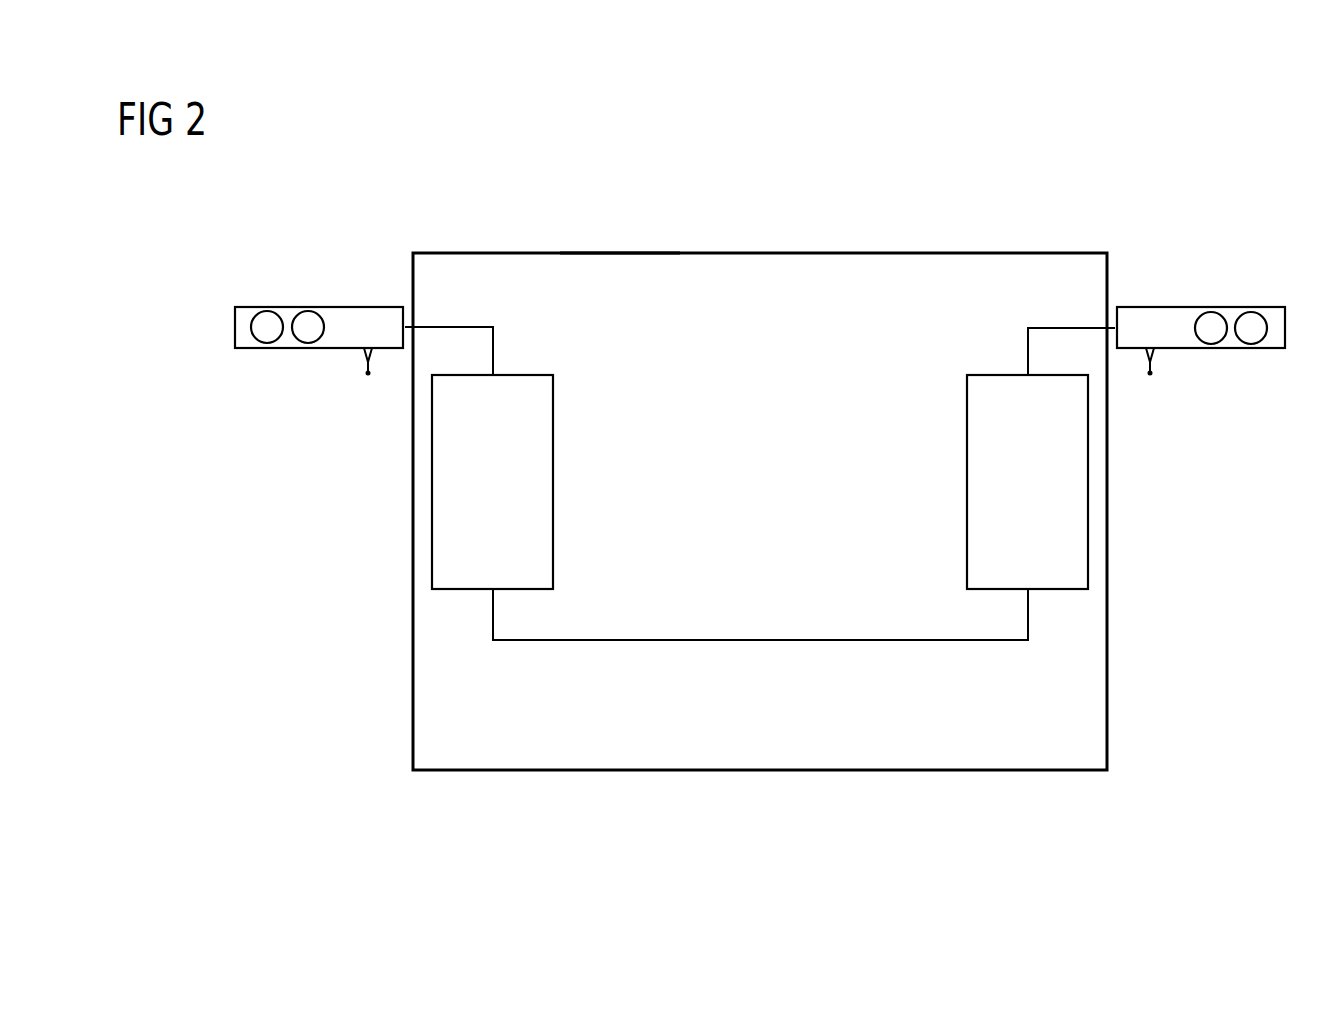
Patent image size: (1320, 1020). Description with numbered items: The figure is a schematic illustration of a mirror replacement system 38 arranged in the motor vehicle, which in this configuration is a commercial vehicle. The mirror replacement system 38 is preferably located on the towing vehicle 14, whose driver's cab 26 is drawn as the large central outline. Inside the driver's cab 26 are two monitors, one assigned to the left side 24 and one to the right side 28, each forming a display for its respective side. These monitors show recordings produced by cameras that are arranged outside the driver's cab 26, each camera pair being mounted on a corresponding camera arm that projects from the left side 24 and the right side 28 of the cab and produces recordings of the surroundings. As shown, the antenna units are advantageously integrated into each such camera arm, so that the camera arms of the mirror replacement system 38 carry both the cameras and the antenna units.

The towing vehicle 14 is at (723, 252).
The driver's cab 26 is at (612, 263).
The mirror replacement system 38 is at (971, 286).
The left side 24 is at (372, 582).
The right side 28 is at (1183, 582).